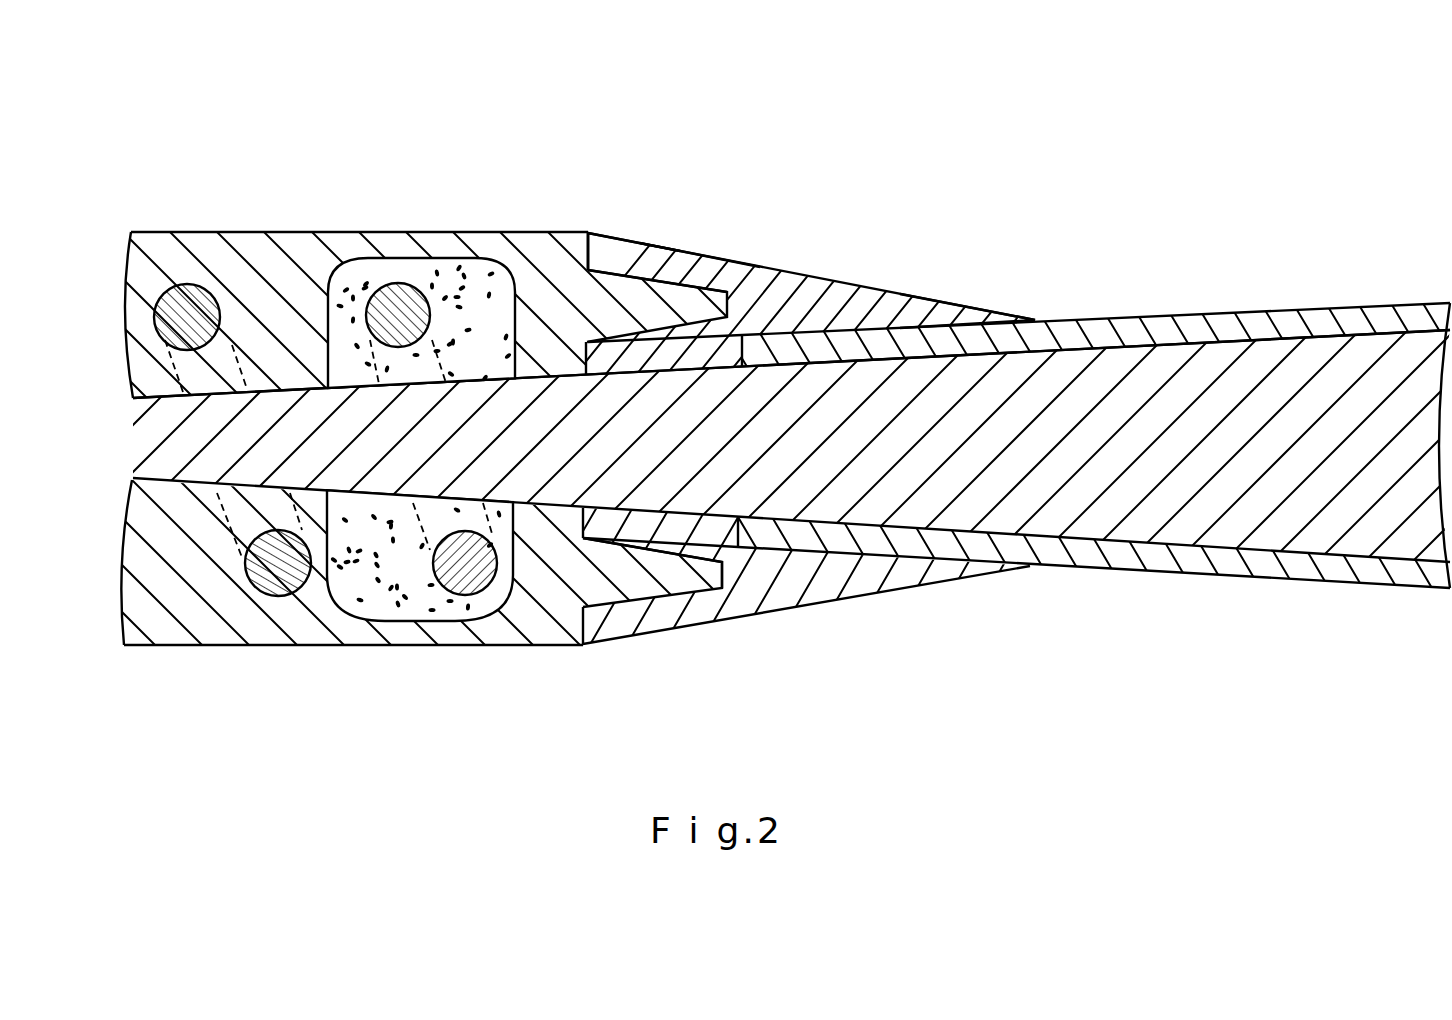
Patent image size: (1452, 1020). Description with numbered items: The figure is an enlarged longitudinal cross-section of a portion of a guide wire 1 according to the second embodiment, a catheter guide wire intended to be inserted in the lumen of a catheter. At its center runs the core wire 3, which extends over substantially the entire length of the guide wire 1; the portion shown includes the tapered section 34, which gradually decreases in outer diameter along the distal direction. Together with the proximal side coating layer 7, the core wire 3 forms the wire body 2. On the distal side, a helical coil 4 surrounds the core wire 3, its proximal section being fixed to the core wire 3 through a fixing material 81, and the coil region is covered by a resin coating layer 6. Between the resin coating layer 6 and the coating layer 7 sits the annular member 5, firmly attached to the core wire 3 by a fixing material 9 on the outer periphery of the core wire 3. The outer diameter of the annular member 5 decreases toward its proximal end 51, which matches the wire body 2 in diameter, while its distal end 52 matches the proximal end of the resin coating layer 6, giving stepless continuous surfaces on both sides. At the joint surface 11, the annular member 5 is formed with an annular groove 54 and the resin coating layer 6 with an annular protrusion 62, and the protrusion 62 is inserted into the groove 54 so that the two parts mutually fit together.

The guide wire 1 is at (1216, 118).
The wire body 2 is at (997, 446).
The core wire 3 is at (1200, 380).
The tapered section 34 is at (1080, 400).
The helical coil 4 is at (186, 298).
The annular member 5 is at (817, 387).
The proximal end 51 is at (1038, 318).
The distal end 52 is at (588, 232).
The groove 54 is at (692, 285).
The resin coating layer 6 is at (460, 415).
The protrusion 62 is at (642, 302).
The coating layer 7 is at (1297, 575).
The fixing material 81 is at (445, 297).
The fixing material 9 is at (718, 530).
The joint surface 11 is at (586, 251).